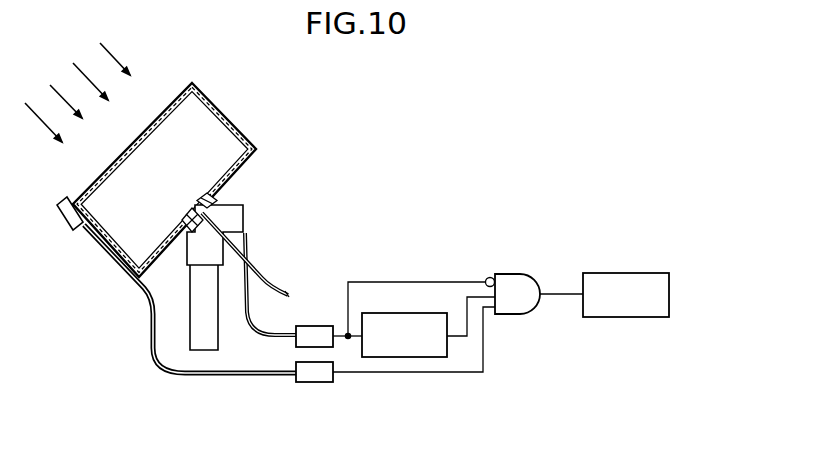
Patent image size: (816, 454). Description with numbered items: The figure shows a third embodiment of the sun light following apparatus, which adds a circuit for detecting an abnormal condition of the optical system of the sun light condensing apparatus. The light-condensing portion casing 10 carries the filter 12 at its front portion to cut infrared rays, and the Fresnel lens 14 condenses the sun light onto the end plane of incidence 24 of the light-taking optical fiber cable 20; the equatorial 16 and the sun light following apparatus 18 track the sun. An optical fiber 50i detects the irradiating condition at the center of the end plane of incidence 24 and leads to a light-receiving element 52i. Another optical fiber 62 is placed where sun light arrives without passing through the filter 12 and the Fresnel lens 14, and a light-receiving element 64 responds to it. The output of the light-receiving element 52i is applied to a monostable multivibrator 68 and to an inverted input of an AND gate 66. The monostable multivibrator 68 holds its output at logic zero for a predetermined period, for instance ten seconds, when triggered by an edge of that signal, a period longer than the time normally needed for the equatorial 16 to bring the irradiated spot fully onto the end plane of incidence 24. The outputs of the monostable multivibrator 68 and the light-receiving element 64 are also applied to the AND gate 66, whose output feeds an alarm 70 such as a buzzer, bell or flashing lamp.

The light-condensing portion casing 10 is at (233, 122).
The filter 12 is at (188, 96).
The Fresnel lens 14 is at (196, 106).
The equatorial 16 is at (218, 198).
The sun light following apparatus 18 is at (244, 219).
The light-taking optical fiber cable 20 is at (264, 274).
The end plane of incidence 24 is at (194, 200).
The optical fiber 50i is at (252, 327).
The light-receiving element 52i is at (312, 326).
The optical fiber 62 is at (70, 232).
The light-receiving element 64 is at (313, 383).
The AND gate 66 is at (525, 274).
The monostable multivibrator 68 is at (388, 313).
The alarm 70 is at (629, 273).